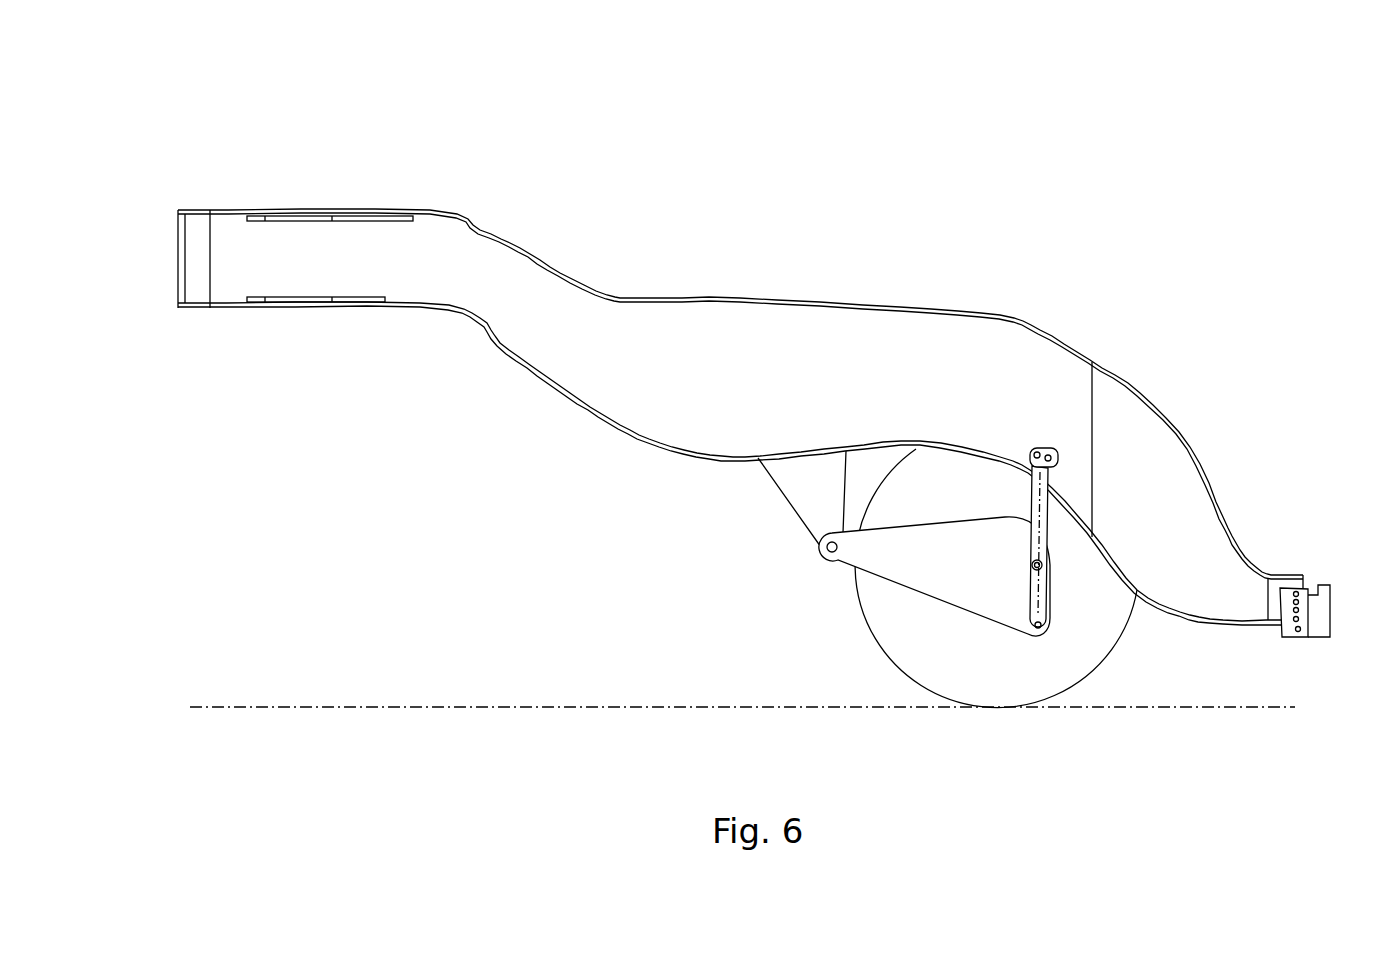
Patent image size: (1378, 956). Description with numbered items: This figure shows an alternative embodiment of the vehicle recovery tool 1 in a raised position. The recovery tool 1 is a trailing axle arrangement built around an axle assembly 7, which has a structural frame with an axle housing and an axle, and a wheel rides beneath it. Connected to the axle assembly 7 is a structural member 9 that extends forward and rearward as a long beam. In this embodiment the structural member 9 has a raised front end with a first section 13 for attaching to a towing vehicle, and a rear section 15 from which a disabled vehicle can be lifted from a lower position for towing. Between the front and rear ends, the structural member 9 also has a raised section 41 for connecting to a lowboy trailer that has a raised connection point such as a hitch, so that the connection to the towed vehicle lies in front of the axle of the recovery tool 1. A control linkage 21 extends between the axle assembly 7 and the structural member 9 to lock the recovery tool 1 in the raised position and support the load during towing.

The vehicle recovery tool 1 is at (878, 240).
The axle assembly 7 is at (833, 600).
The structural member 9 is at (758, 318).
The first section 13 is at (202, 160).
The rear section 15 is at (1327, 543).
The control linkage 21 is at (1073, 580).
The raised section 41 is at (660, 275).